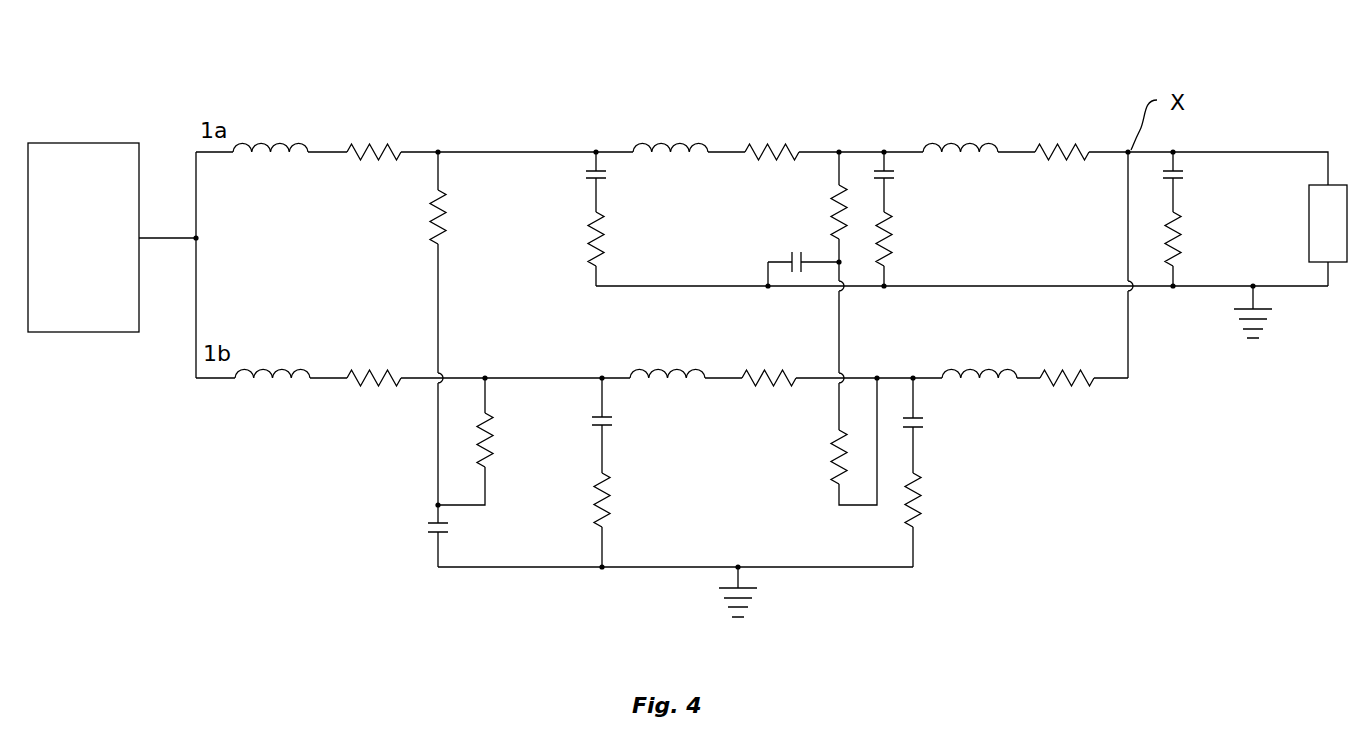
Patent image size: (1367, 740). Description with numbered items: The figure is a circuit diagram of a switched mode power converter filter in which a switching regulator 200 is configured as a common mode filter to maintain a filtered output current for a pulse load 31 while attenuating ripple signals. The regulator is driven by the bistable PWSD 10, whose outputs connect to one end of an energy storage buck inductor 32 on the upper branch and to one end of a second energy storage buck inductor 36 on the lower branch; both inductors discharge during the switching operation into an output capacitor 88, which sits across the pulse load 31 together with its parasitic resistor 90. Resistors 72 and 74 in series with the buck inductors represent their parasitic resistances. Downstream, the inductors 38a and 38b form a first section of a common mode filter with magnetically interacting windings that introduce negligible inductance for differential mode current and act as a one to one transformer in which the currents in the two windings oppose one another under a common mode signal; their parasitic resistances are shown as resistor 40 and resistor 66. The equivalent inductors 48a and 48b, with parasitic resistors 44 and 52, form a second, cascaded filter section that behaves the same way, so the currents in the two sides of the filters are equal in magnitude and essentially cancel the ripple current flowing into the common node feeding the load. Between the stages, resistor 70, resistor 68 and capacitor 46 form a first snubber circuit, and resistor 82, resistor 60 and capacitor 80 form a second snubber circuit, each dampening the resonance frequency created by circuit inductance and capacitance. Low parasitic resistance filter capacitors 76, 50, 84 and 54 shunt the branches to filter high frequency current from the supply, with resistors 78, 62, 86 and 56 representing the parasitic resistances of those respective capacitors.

The switching regulator 200 is at (163, 119).
The bistable PWSD 10 is at (112, 333).
The energy storage buck inductor 32 is at (259, 148).
The resistor 72 is at (373, 146).
The resistor 70 is at (432, 221).
The second energy storage buck inductor 36 is at (264, 384).
The resistor 74 is at (373, 390).
The inductor 38a is at (659, 146).
The resistor 40 is at (772, 146).
The low parasitic resistance filter capacitor 76 is at (604, 173).
The resistor 78 is at (604, 262).
The resistor 82 is at (831, 200).
The capacitor 80 is at (794, 256).
The low parasitic resistance filter capacitor 84 is at (896, 173).
The resistor 86 is at (896, 236).
The equivalent inductor 48a is at (952, 146).
The resistor 44 is at (1062, 146).
The output capacitor 88 is at (1185, 173).
The resistor 90 is at (1185, 236).
The pulse load 31 is at (1305, 215).
The inductor 38b is at (650, 374).
The resistor 66 is at (760, 374).
The equivalent inductor 48b is at (962, 374).
The resistor 52 is at (1060, 374).
The resistor 68 is at (490, 441).
The capacitor 46 is at (448, 530).
The low parasitic resistance filter capacitor 50 is at (612, 421).
The resistor 62 is at (612, 498).
The resistor 60 is at (832, 456).
The low parasitic resistance filter capacitor 54 is at (922, 421).
The resistor 56 is at (922, 496).